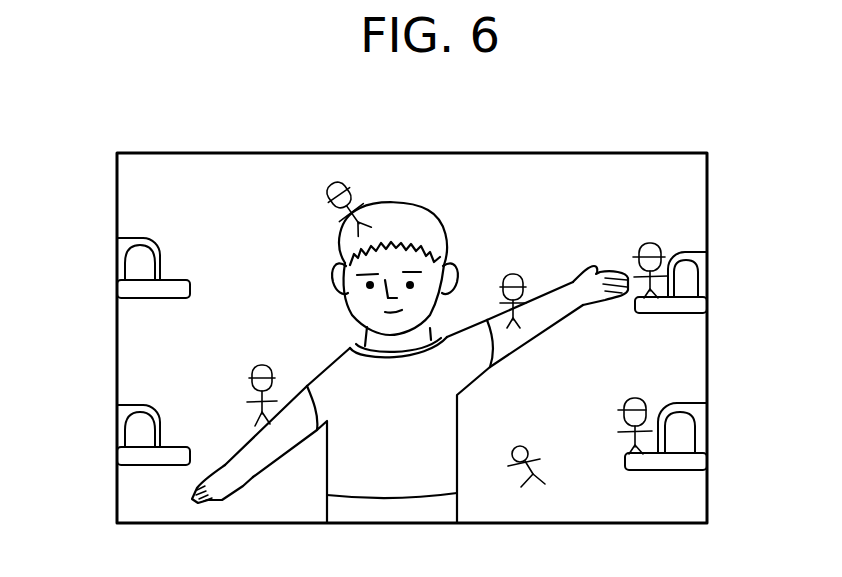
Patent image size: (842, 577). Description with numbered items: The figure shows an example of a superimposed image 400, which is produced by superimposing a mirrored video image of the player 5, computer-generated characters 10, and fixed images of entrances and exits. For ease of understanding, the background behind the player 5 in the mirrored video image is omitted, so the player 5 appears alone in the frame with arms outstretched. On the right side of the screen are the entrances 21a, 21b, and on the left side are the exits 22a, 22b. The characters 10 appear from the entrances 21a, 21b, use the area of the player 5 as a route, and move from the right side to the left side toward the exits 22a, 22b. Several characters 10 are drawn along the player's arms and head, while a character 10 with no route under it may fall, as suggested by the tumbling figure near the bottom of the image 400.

The superimposed image 400 is at (578, 152).
The player 5 is at (433, 215).
The character 10 is at (330, 197).
The entrance 21a is at (707, 263).
The entrance 21b is at (706, 413).
The exit 22a is at (117, 254).
The exit 22b is at (117, 418).